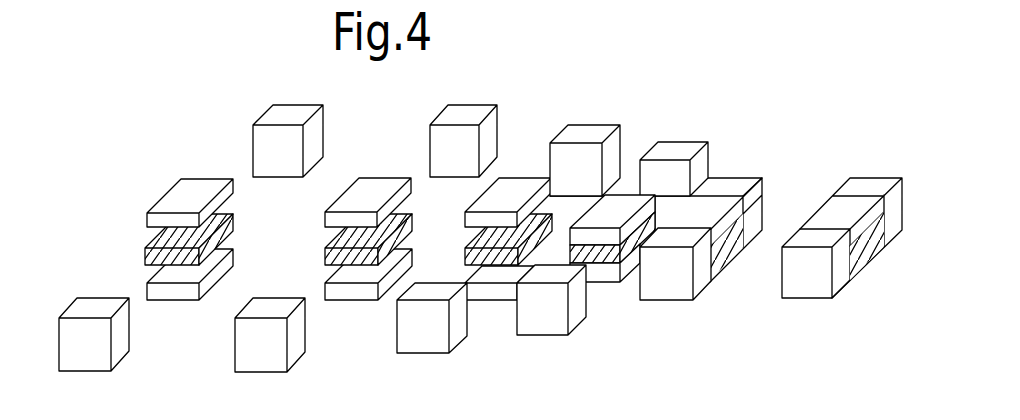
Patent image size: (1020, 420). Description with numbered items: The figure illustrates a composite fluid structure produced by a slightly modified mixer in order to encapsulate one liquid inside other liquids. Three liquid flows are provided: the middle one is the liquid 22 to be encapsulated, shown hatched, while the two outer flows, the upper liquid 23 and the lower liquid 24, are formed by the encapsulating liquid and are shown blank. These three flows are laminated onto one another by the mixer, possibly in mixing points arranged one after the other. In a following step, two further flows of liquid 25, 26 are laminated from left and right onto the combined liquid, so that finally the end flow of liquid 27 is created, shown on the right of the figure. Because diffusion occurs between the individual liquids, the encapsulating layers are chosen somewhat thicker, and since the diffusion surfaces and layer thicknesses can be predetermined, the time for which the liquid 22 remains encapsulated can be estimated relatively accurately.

The liquid to be encapsulated 22 is at (230, 226).
The upper liquid 23 is at (183, 190).
The lower liquid 24 is at (180, 291).
The further flow of liquid 25 is at (587, 133).
The further flow of liquid 26 is at (545, 325).
The end flow of liquid 27 is at (875, 162).